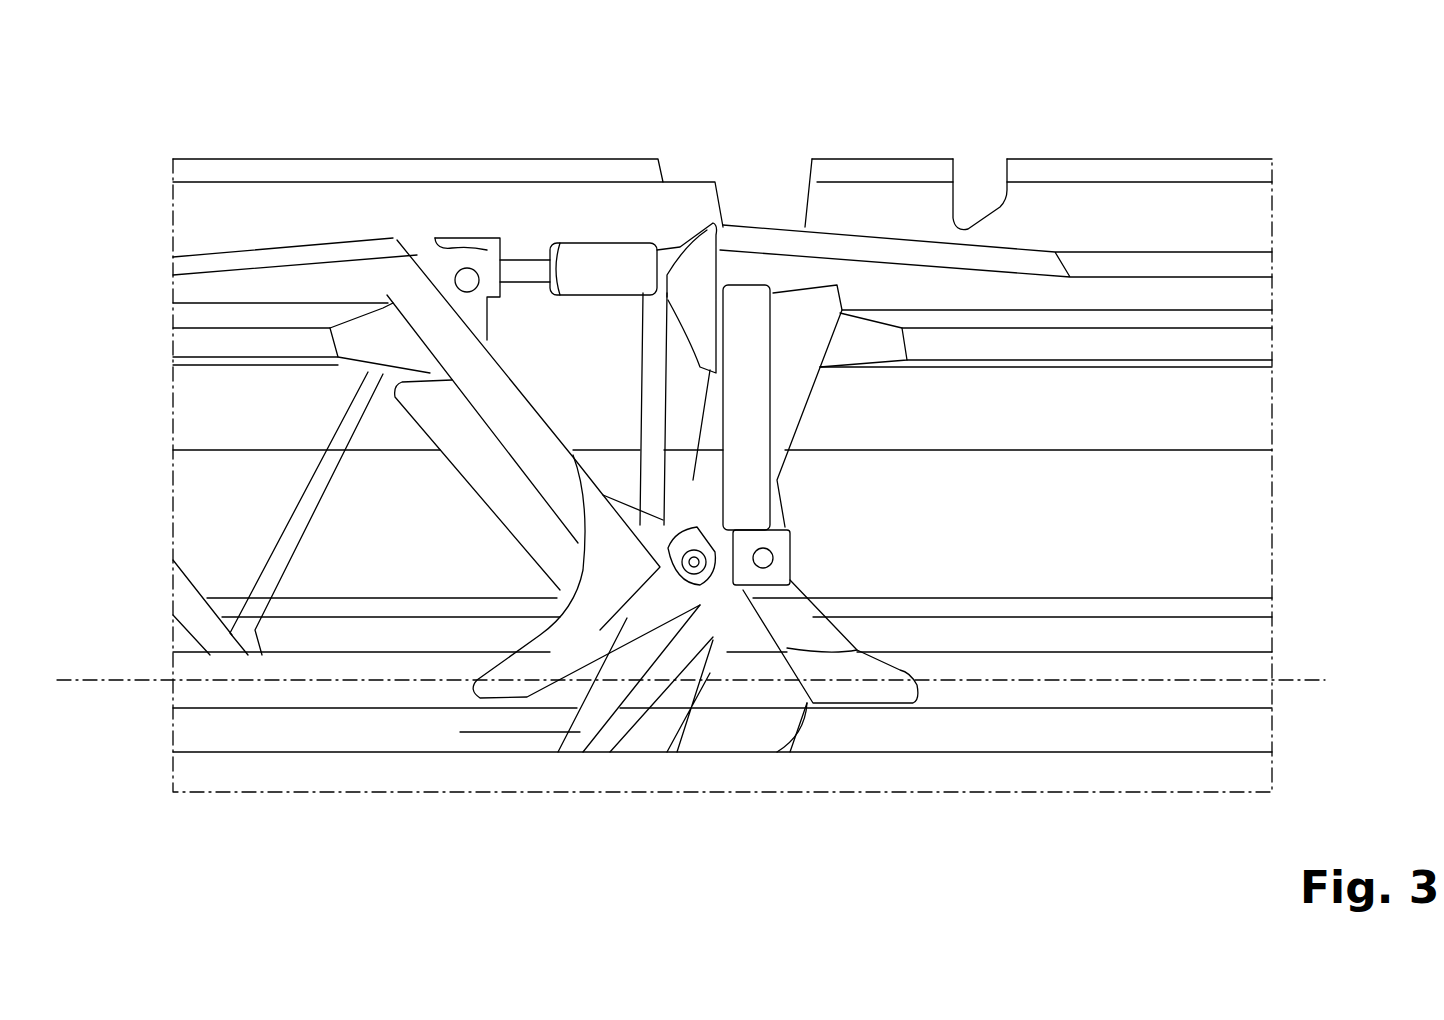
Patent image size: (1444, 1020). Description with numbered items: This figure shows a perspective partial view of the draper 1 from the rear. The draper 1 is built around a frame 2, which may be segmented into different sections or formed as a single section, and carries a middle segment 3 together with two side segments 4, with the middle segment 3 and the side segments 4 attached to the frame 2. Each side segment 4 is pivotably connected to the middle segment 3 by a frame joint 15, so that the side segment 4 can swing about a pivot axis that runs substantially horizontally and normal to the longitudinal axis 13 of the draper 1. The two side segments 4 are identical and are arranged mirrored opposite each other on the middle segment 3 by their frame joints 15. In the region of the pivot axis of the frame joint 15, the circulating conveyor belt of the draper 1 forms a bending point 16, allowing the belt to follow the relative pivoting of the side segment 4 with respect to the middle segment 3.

The draper 1 is at (1312, 123).
The frame 2 is at (213, 497).
The middle segment 3 is at (348, 157).
The side segment 4 is at (1078, 157).
The longitudinal axis 13 is at (103, 680).
The frame joint 15 is at (770, 708).
The bending point 16 is at (700, 588).